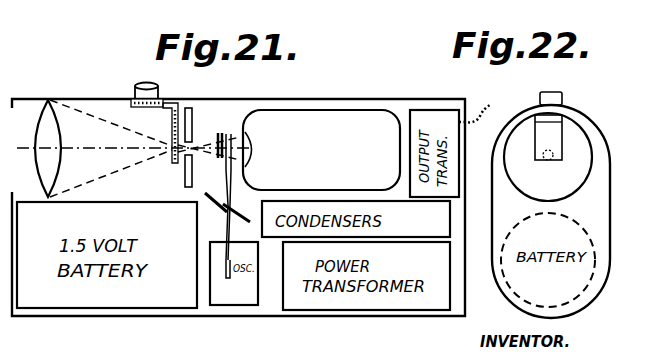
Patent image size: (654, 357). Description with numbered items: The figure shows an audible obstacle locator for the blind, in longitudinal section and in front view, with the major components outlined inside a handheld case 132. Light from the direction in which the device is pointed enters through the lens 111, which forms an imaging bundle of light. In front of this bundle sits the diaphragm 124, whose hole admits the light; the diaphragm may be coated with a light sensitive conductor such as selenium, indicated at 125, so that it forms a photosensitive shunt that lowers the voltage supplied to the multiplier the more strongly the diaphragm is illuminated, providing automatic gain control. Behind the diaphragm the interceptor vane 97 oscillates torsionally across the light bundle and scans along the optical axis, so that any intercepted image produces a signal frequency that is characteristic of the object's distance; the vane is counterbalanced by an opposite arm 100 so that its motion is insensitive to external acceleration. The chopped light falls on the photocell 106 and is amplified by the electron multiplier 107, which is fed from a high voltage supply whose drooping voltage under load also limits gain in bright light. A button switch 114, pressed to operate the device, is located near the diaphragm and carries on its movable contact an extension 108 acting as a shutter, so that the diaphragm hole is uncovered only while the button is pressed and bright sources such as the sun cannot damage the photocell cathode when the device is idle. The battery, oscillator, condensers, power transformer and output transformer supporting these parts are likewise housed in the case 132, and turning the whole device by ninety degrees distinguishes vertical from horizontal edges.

In FIG. 21, the interceptor vane 97 is at (201, 172).
In FIG. 21, the opposite arm 100 is at (228, 228).
In FIG. 21, the photocell 106 is at (256, 150).
In FIG. 21, the electron multiplier 107 is at (372, 161).
In FIG. 21, the shutter extension 108 is at (170, 160).
In FIG. 22, the shutter extension 108 is at (556, 156).
In FIG. 21, the lens 111 is at (49, 148).
In FIG. 22, the lens 111 is at (570, 178).
In FIG. 21, the button switch 114 is at (160, 92).
In FIG. 22, the button switch 114 is at (555, 97).
In FIG. 21, the diaphragm 124 is at (194, 116).
In FIG. 21, the light sensitive conductor coating 125 is at (177, 183).
In FIG. 21, the handheld case 132 is at (304, 318).
In FIG. 22, the handheld case 132 is at (598, 312).